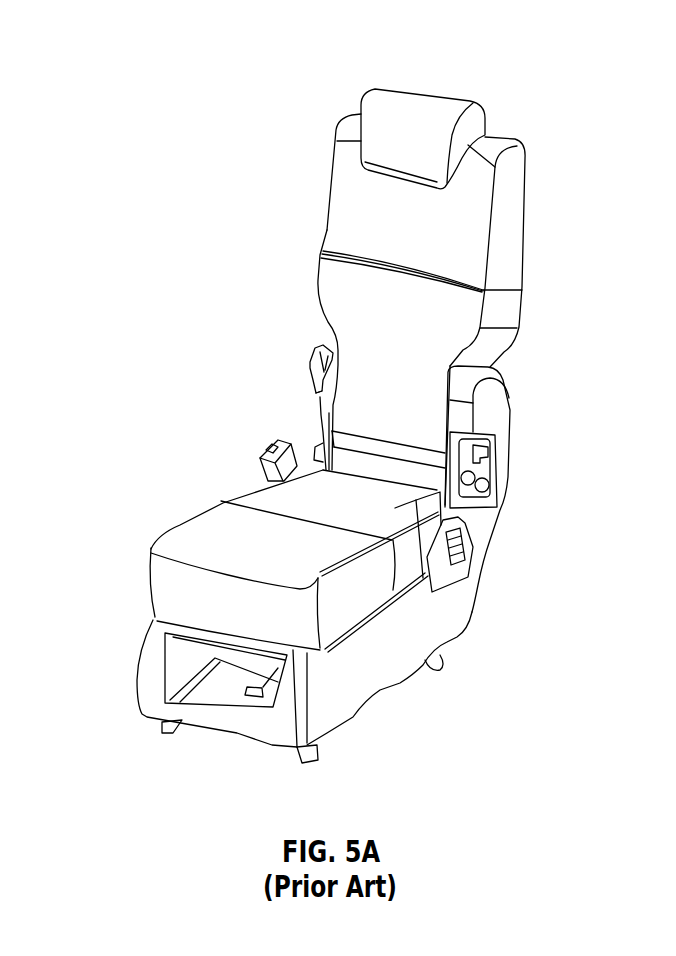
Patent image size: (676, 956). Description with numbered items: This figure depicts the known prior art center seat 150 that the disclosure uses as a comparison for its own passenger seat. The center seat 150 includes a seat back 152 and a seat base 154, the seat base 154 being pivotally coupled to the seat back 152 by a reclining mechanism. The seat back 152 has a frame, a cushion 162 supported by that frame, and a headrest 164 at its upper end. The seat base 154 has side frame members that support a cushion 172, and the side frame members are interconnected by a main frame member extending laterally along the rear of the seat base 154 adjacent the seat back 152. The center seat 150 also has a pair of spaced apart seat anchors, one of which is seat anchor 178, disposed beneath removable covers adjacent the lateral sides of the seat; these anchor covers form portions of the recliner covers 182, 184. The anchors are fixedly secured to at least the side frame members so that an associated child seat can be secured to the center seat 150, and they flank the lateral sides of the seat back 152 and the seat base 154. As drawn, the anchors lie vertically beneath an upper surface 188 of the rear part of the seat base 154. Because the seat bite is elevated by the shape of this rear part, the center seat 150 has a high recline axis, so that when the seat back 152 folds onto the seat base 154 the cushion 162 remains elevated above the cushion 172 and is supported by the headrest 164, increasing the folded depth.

The center seat 150 is at (233, 307).
The seat back 152 is at (328, 282).
The seat base 154 is at (333, 610).
The cushion 162 is at (480, 211).
The headrest 164 is at (440, 103).
The cushion 172 is at (178, 537).
The seat anchor 178 is at (491, 484).
The recliner cover 182 is at (500, 408).
The recliner cover 184 is at (311, 389).
The upper surface 188 is at (410, 448).